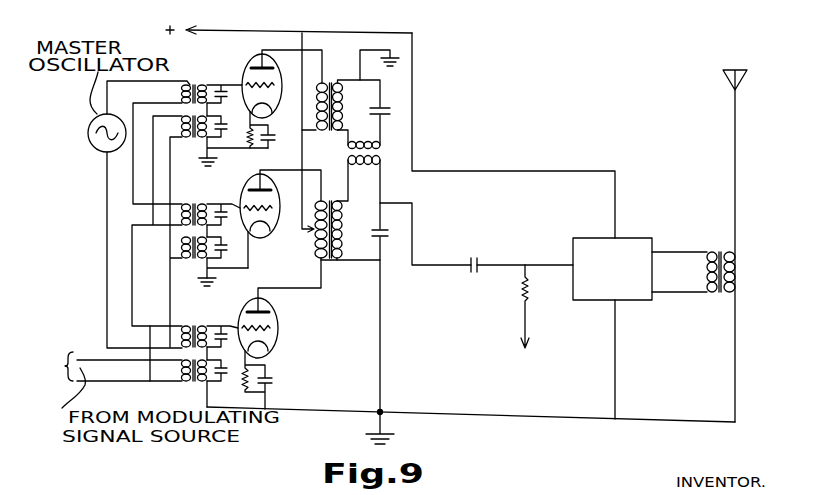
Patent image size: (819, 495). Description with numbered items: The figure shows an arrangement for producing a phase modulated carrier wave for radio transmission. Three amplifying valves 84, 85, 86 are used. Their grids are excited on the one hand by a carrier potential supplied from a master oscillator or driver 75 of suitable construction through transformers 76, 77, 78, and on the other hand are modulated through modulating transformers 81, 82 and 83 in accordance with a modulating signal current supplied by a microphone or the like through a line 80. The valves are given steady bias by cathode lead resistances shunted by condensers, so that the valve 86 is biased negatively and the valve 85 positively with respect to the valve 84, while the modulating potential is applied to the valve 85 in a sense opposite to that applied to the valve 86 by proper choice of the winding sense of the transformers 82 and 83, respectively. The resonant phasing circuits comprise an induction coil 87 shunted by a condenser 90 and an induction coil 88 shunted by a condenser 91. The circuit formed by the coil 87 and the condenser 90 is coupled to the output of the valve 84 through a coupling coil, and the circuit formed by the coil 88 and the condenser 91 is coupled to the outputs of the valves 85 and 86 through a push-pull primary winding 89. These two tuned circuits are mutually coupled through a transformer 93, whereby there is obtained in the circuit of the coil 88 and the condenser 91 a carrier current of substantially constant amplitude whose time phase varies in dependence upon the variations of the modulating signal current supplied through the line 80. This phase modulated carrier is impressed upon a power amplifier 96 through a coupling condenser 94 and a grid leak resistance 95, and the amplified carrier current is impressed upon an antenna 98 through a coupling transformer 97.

The master oscillator 75 is at (89, 131).
The transformer 76 is at (194, 84).
The transformer 77 is at (194, 204).
The transformer 78 is at (194, 326).
The line 80 is at (112, 366).
The modulating transformer 81 is at (194, 138).
The modulating transformer 82 is at (194, 258).
The modulating transformer 83 is at (194, 384).
The amplifying valve 84 is at (246, 62).
The amplifying valve 85 is at (280, 240).
The amplifying valve 86 is at (279, 319).
The induction coil 87 is at (336, 82).
The induction coil 88 is at (334, 200).
The push-pull primary winding 89 is at (327, 261).
The condenser 90 is at (379, 106).
The condenser 91 is at (374, 228).
The transformer 93 is at (381, 152).
The coupling condenser 94 is at (480, 264).
The grid leak resistance 95 is at (522, 291).
The power amplifier 96 is at (637, 239).
The coupling transformer 97 is at (720, 250).
The antenna 98 is at (748, 78).